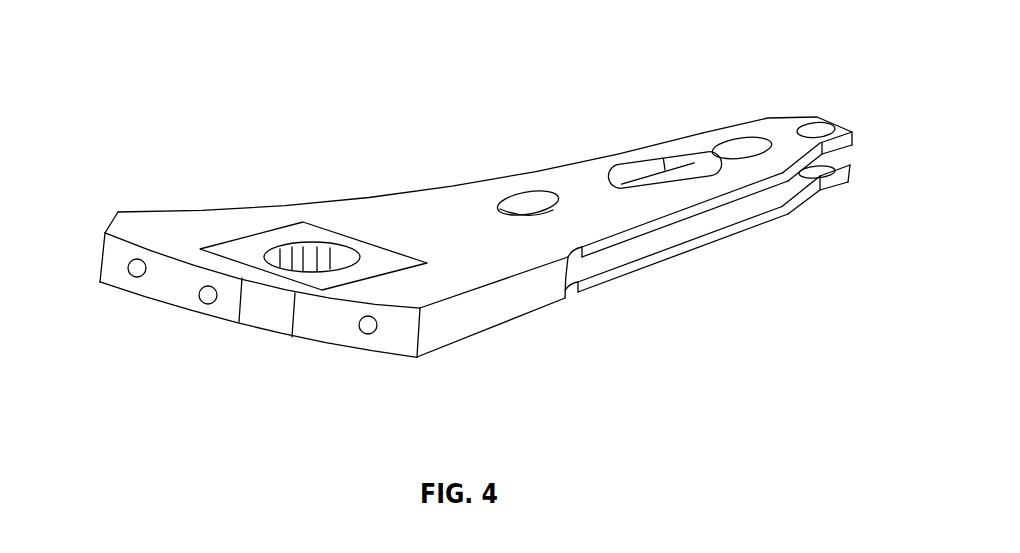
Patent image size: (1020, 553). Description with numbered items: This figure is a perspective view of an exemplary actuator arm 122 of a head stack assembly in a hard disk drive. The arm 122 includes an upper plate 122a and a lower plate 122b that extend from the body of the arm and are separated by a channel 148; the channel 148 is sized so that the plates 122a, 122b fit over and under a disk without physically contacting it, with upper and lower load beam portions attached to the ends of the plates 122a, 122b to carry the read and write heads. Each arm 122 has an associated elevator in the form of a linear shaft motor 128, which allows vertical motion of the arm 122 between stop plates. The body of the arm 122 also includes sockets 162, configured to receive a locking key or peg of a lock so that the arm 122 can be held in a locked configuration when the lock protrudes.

The actuator arm 122 is at (429, 89).
The upper plate 122a is at (693, 143).
The lower plate 122b is at (717, 241).
The linear shaft motor 128 is at (288, 243).
The channel 148 is at (780, 197).
The sockets 162 is at (137, 268).